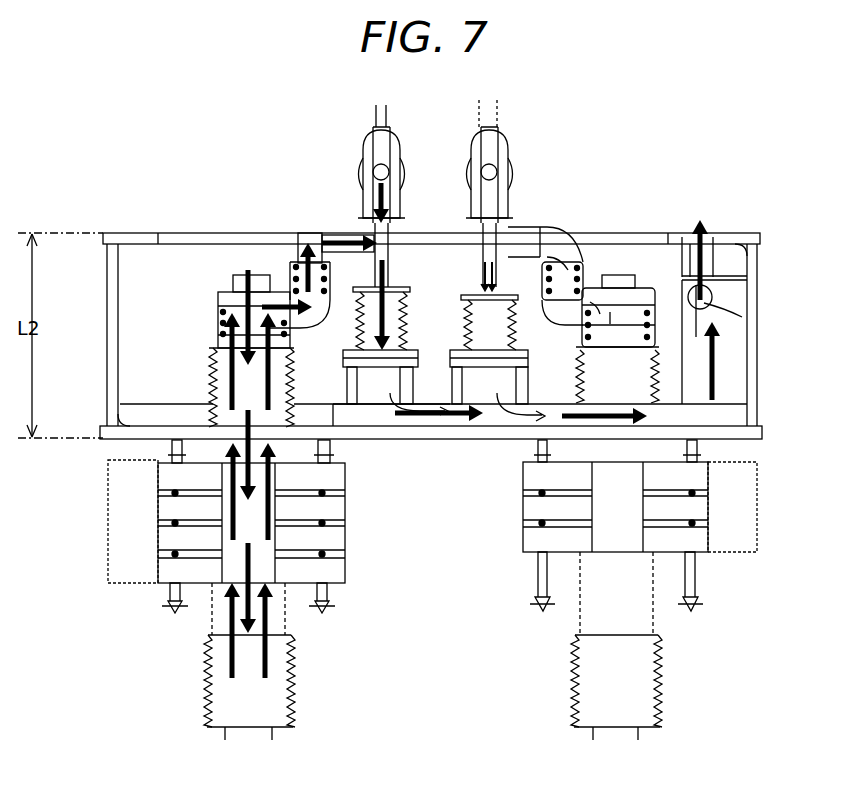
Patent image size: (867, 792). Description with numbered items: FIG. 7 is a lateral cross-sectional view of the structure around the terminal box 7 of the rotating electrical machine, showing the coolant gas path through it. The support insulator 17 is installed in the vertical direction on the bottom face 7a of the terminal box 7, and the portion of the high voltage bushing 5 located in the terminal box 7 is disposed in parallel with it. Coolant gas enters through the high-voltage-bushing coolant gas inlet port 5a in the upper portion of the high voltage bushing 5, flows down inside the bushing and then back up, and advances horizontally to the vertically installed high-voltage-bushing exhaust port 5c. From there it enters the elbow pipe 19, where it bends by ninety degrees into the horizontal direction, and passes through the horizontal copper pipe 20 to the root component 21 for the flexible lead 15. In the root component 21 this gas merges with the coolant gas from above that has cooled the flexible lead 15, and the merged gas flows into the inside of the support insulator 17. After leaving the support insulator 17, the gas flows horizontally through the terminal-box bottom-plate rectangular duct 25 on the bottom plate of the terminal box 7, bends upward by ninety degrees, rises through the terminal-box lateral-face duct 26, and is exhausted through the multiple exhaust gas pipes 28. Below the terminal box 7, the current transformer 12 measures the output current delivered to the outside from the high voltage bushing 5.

The high voltage bushing 5 is at (294, 707).
The high-voltage-bushing coolant gas inlet port 5a is at (237, 300).
The high-voltage-bushing exhaust port 5c is at (288, 276).
The terminal box 7 is at (757, 293).
The bottom face of the terminal box 7a is at (762, 433).
The current transformer 12 is at (338, 573).
The flexible lead 15 is at (373, 160).
The support insulator 17 is at (397, 308).
The elbow pipe 19 is at (311, 233).
The horizontal copper pipe 20 is at (344, 233).
The root component for the flexible lead 21 is at (390, 243).
The terminal-box bottom-plate rectangular duct 25 is at (563, 403).
The terminal-box lateral-face duct 26 is at (738, 365).
The exhaust gas pipes 28 is at (710, 235).